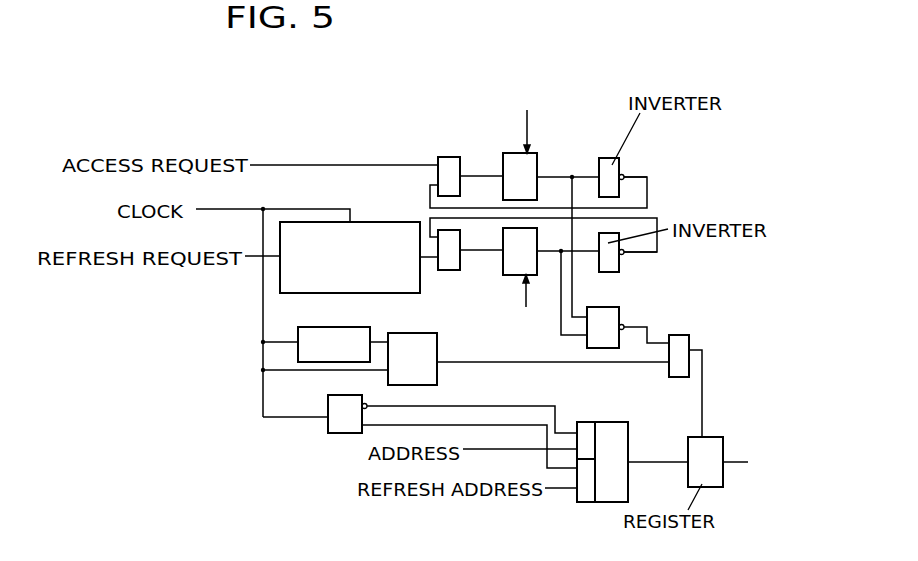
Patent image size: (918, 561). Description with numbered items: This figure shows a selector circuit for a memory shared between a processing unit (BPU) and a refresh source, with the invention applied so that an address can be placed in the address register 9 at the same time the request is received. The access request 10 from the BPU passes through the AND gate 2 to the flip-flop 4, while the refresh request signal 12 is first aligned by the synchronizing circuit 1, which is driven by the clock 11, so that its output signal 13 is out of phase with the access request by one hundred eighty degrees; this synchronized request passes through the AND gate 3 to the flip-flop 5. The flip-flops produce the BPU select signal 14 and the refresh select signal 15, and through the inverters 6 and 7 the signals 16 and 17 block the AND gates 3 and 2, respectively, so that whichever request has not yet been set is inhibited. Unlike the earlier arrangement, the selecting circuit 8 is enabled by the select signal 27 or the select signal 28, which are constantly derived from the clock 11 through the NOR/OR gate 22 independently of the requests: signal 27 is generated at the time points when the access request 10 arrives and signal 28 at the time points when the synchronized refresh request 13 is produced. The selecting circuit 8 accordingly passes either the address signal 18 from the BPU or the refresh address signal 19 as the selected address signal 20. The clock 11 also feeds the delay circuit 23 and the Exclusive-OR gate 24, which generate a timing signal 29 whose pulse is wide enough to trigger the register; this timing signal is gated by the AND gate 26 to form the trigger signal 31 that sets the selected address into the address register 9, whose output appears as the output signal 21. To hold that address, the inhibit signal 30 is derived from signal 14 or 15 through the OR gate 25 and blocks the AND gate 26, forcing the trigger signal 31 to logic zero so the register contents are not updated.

The synchronizing circuit 1 is at (357, 294).
The AND gate 2 is at (450, 157).
The AND gate 3 is at (452, 271).
The flip-flop 4 is at (520, 153).
The flip-flop 5 is at (519, 276).
The inverter 6 is at (609, 158).
The inverter 7 is at (609, 272).
The selecting circuit 8 is at (600, 422).
The address register 9 is at (710, 437).
The access request 10 is at (352, 165).
The synchronizing clock signal 11 is at (231, 196).
The refresh request signal 12 is at (253, 258).
The output signal from the synchronizing circuit 13 is at (425, 259).
The BPU select signal 14 is at (560, 176).
The refresh select signal 15 is at (545, 253).
The signal 16 is at (640, 177).
The signal 17 is at (657, 252).
The address signal from the BPU 18 is at (485, 450).
The refresh address signal 19 is at (560, 490).
The address signal selected by the selecting circuit 20 is at (650, 462).
The output signal from the address register 21 is at (740, 463).
The NOR/OR gate 22 is at (330, 433).
The delay circuit 23 is at (325, 327).
The Exclusive-OR gate 24 is at (438, 347).
The OR gate 25 is at (613, 307).
The AND gate 26 is at (689, 349).
The BPU select signal 27 is at (468, 406).
The refresh request select signal 28 is at (508, 425).
The timing signal 29 is at (510, 362).
The inhibit signal 30 is at (655, 343).
The trigger signal 31 is at (702, 376).